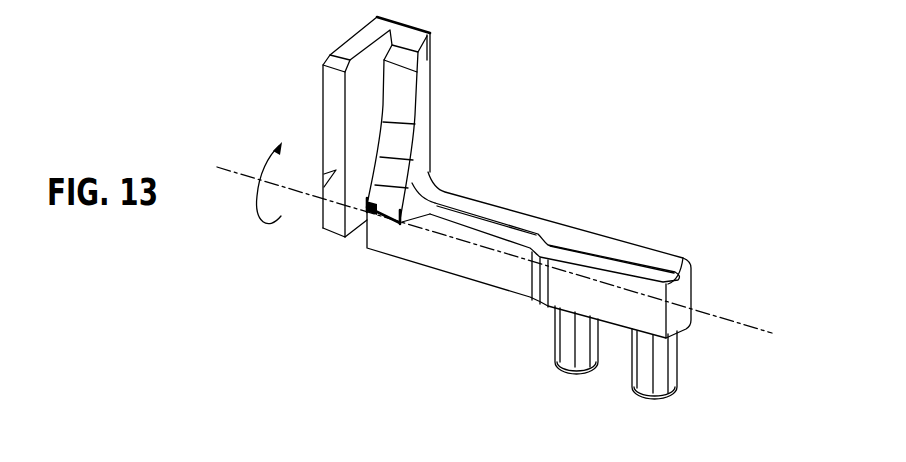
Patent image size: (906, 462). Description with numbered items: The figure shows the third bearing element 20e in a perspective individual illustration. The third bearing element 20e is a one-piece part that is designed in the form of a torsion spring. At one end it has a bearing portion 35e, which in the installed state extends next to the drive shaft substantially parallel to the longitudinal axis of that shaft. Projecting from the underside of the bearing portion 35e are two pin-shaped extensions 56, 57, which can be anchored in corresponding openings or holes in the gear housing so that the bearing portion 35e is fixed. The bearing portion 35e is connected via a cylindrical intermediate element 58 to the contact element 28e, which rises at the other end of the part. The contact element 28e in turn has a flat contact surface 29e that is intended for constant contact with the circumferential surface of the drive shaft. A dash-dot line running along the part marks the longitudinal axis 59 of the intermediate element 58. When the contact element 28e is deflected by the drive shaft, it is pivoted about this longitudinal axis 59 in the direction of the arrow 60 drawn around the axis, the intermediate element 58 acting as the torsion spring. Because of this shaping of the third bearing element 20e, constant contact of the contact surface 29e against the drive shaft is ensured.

The third bearing element 20e is at (422, 295).
The contact element 28e is at (323, 97).
The contact surface 29e is at (323, 183).
The intermediate element 58 is at (495, 214).
The bearing portion 35e is at (618, 250).
The longitudinal axis 59 is at (722, 315).
The arrow 60 is at (260, 167).
The pin-shaped extension 56 is at (565, 352).
The pin-shaped extension 57 is at (637, 372).